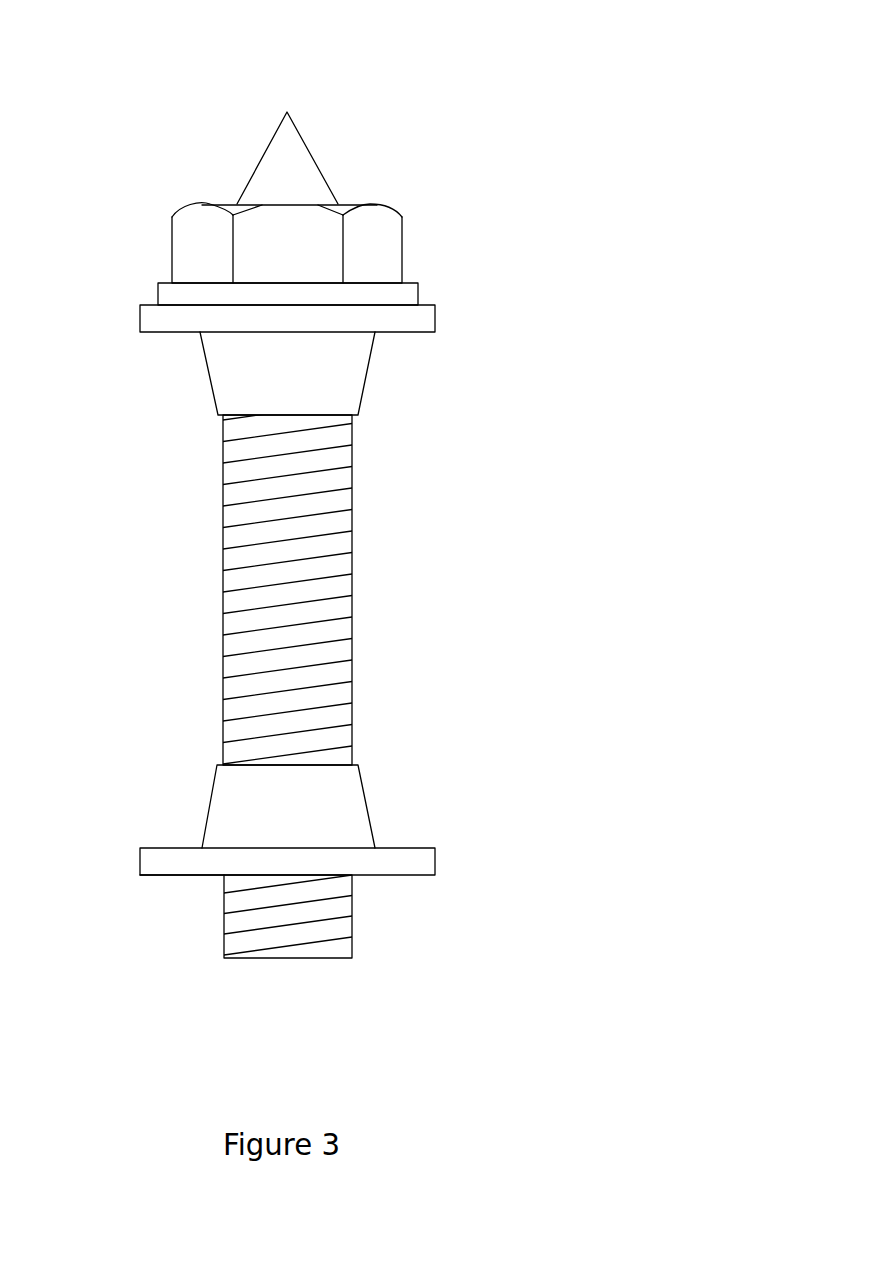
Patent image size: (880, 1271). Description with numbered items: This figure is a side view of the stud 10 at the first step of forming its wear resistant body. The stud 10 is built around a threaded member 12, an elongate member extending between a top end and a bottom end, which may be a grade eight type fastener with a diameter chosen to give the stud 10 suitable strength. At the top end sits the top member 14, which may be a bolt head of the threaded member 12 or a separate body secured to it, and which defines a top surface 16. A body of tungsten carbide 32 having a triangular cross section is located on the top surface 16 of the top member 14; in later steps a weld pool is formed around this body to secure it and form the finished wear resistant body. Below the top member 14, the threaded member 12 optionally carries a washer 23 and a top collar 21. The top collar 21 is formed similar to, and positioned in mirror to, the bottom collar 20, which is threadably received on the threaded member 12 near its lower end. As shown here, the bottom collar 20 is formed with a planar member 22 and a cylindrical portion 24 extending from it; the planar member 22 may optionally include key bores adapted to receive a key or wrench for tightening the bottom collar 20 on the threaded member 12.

The stud 10 is at (407, 92).
The threaded member 12 is at (353, 595).
The top member 14 is at (403, 250).
The top surface 16 is at (319, 203).
The bottom collar 20 is at (437, 863).
The top collar 21 is at (417, 332).
The planar member 22 is at (140, 876).
The washer 23 is at (417, 297).
The cylindrical portion 24 is at (213, 790).
The body of tungsten carbide 32 is at (262, 157).